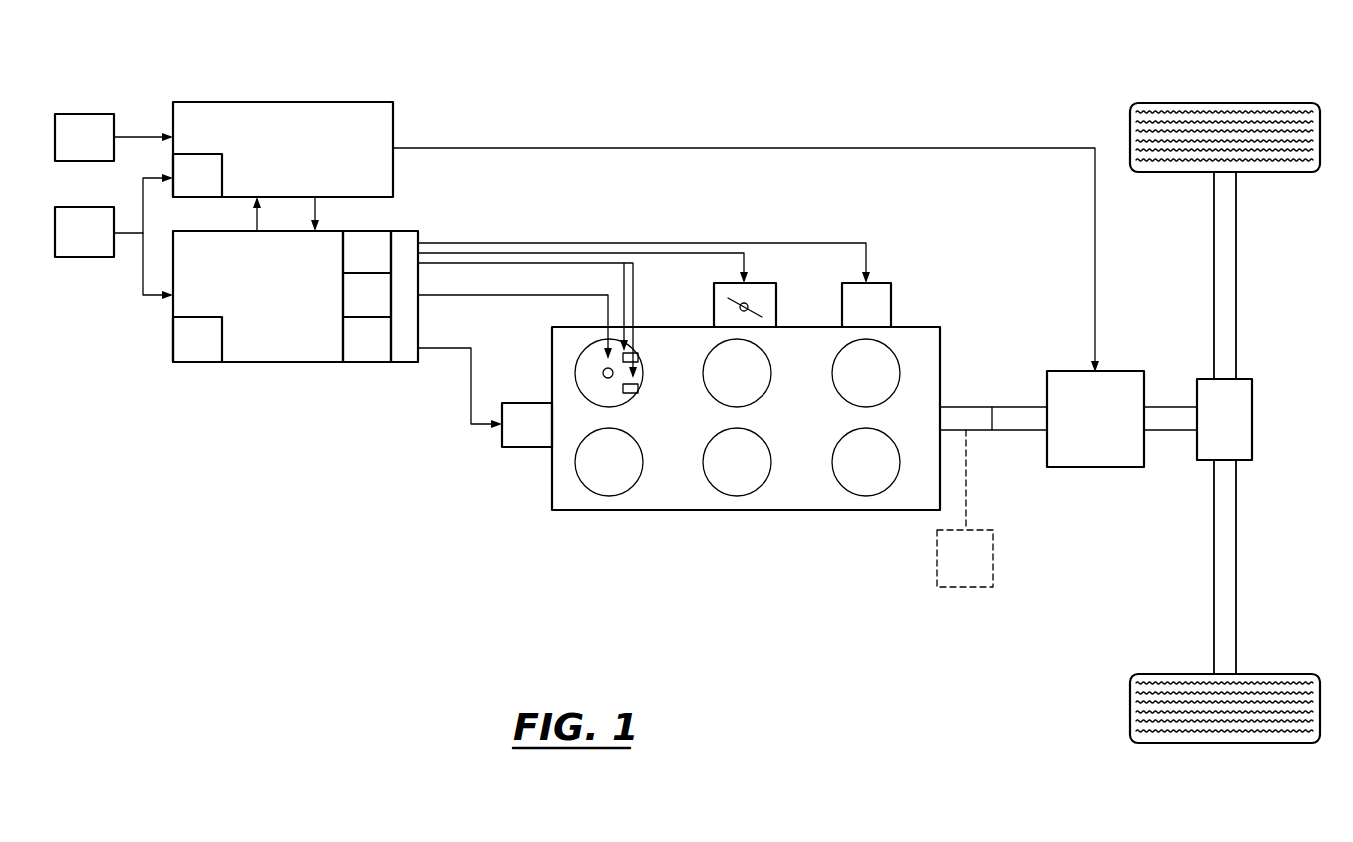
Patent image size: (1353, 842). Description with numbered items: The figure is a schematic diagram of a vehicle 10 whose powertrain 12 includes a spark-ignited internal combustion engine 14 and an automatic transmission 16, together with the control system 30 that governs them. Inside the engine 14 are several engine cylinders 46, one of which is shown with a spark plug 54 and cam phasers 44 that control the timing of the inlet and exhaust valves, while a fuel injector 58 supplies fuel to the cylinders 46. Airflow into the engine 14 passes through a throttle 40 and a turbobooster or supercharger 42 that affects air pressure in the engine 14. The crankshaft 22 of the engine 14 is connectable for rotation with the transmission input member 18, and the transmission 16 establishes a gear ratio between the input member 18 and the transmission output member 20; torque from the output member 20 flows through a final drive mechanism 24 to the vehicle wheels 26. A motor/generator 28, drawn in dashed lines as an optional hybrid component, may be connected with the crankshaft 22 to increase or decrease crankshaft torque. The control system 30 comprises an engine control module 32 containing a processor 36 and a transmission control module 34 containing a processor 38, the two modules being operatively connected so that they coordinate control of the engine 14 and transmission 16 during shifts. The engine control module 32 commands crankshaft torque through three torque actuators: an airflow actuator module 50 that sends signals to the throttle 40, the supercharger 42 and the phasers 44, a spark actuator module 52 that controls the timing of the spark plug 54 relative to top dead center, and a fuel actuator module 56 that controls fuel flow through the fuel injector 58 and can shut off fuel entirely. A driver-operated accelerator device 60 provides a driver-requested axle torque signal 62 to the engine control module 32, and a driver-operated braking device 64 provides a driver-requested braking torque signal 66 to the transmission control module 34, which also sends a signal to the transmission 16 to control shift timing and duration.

The vehicle 10 is at (1020, 52).
The powertrain 12 is at (719, 530).
The engine 14 is at (794, 426).
The transmission 16 is at (1084, 430).
The transmission input member 18 is at (1018, 407).
The transmission output member 20 is at (1172, 407).
The crankshaft 22 is at (957, 407).
The final drive mechanism 24 is at (1244, 378).
The vehicle wheels 26 is at (1225, 103).
The motor/generator 28 is at (955, 570).
The control system 30 is at (250, 388).
The engine control module 32 is at (272, 307).
The transmission control module 34 is at (294, 161).
The processor 36 is at (186, 351).
The processor 38 is at (186, 187).
The throttle 40 is at (777, 307).
The turbobooster or supercharger 42 is at (855, 316).
The cam phasers 44 is at (640, 357).
The engine cylinders 46 is at (577, 384).
The airflow actuator module 50 is at (356, 263).
The spark actuator module 52 is at (356, 306).
The spark plug 54 is at (608, 379).
The fuel actuator module 56 is at (356, 350).
The fuel injector 58 is at (516, 436).
The accelerator device 60 is at (73, 243).
The driver-requested axle torque signal 62 is at (140, 275).
The braking device 64 is at (73, 148).
The driver-requested braking torque signal 66 is at (142, 135).